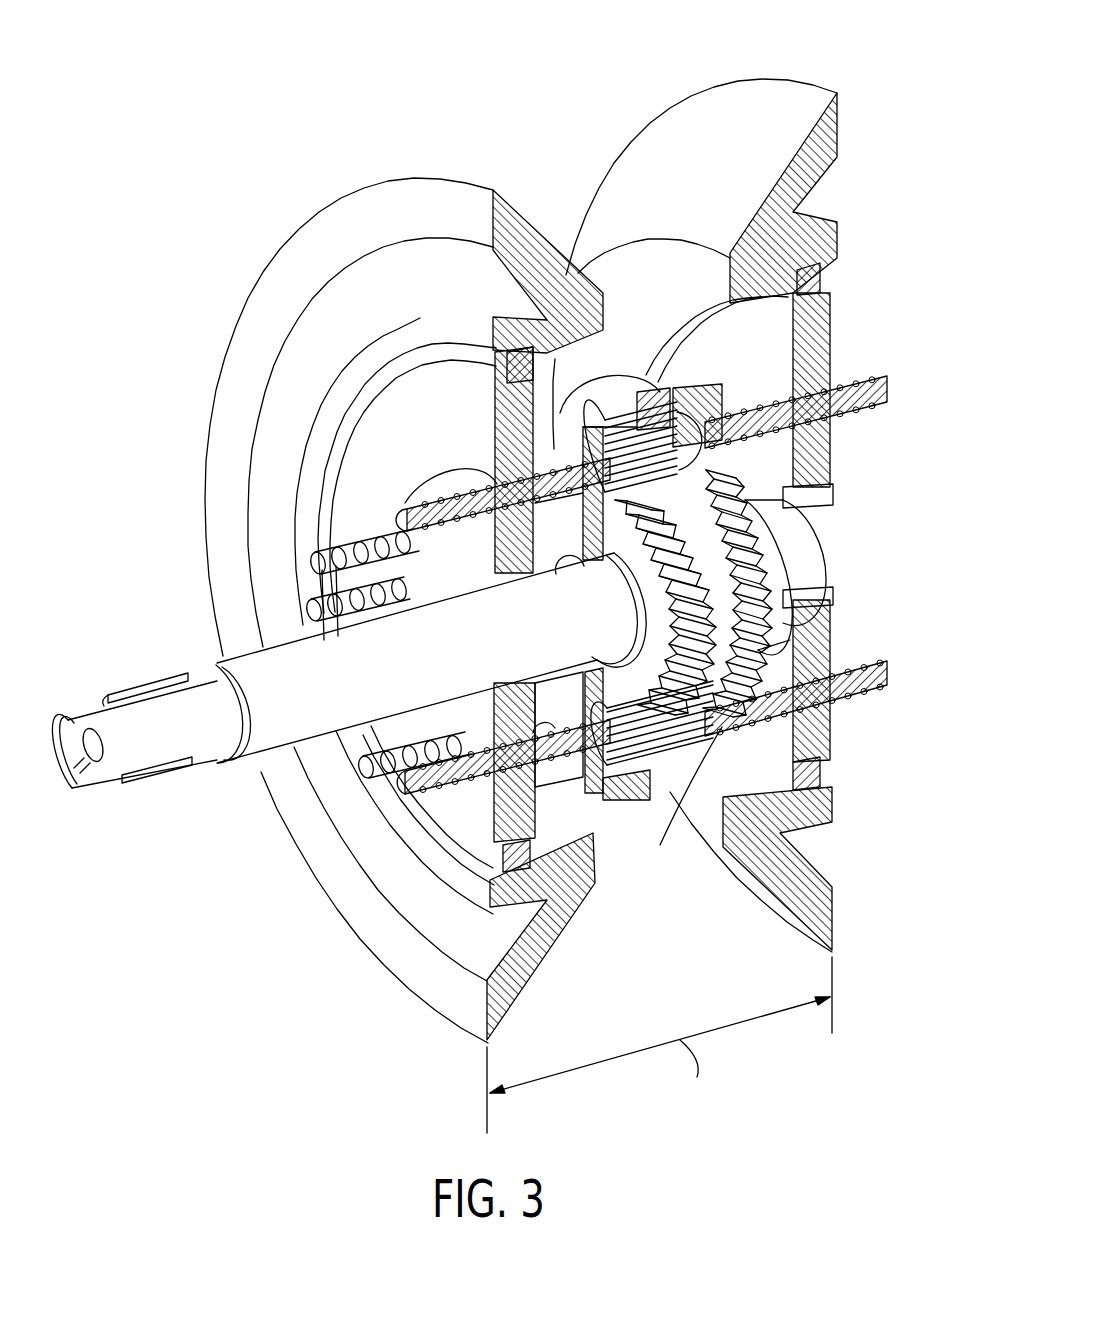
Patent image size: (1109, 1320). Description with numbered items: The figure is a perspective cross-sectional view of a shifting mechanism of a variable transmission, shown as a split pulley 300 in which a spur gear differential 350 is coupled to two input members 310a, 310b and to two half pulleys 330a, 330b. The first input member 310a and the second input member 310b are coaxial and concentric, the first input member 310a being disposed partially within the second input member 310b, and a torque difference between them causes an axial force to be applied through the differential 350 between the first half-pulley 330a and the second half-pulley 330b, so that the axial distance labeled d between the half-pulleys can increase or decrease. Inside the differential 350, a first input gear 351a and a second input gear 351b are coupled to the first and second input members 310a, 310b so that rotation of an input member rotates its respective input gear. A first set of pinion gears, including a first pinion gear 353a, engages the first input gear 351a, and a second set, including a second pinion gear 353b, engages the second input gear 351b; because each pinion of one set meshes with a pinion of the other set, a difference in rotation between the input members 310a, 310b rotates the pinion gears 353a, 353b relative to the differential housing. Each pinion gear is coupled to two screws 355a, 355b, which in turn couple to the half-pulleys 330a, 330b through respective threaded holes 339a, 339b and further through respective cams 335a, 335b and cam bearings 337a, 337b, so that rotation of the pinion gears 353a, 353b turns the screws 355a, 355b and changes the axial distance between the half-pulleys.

The split pulley 300 is at (519, 575).
The first input member 310a is at (110, 767).
The second input member 310b is at (270, 713).
The first half-pulley 330a is at (775, 107).
The second half-pulley 330b is at (468, 215).
The cam 335a is at (820, 335).
The cam 335b is at (375, 958).
The cam bearing 337a is at (813, 280).
The cam bearing 337b is at (421, 988).
The threaded hole 339a is at (840, 470).
The threaded hole 339b is at (494, 441).
The spur gear differential 350 is at (622, 858).
The first input gear 351a is at (772, 588).
The second input gear 351b is at (768, 645).
The first pinion gear 353a is at (677, 772).
The second pinion gear 353b is at (720, 405).
The screw 355a is at (887, 378).
The screw 355b is at (451, 506).